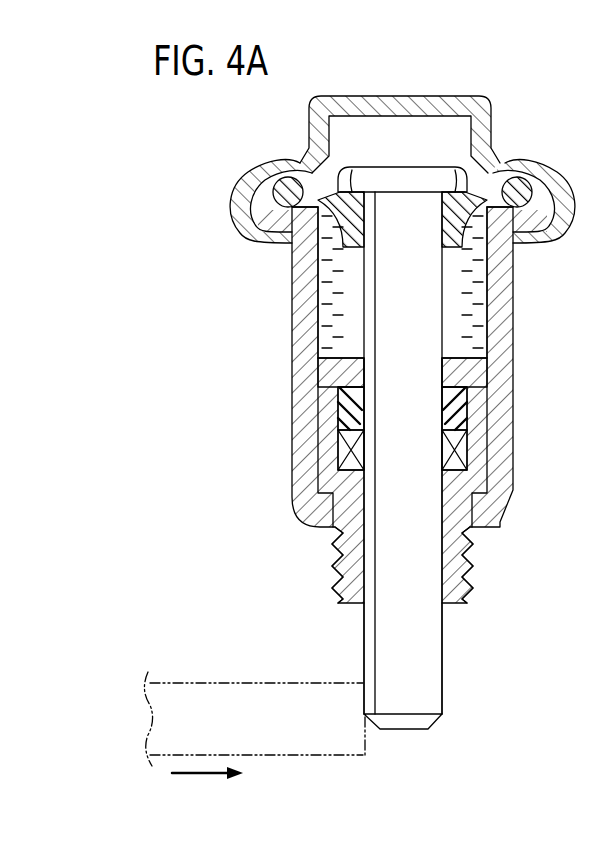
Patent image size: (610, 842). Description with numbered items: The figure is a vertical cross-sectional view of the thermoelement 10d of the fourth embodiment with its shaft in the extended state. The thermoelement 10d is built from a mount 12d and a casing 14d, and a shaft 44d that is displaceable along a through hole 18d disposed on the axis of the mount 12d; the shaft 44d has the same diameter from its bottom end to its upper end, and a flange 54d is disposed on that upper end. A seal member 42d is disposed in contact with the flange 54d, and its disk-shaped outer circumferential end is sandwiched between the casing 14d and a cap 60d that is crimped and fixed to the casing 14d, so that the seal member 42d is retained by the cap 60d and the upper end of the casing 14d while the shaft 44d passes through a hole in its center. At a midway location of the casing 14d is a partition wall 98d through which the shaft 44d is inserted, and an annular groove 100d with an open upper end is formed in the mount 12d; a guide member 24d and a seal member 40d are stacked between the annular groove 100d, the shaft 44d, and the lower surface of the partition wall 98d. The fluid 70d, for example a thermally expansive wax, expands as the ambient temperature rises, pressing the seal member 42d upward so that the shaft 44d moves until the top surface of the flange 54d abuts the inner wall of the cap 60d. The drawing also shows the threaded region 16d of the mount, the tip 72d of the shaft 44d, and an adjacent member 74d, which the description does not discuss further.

The thermoelement 10d is at (411, 409).
The mount 12d is at (465, 552).
The casing 14d is at (503, 417).
The thread portion 16d is at (333, 565).
The through hole 18d is at (440, 578).
The guide member 24d is at (345, 452).
The seal member 40d is at (347, 413).
The seal member 42d is at (510, 188).
The shaft 44d is at (422, 668).
The flange 54d is at (440, 176).
The cap 60d is at (429, 100).
The fluid 70d is at (462, 300).
The bolt tip 72d is at (407, 725).
The workpiece 74d is at (253, 695).
The partition wall 98d is at (335, 368).
The annular groove 100d is at (443, 448).